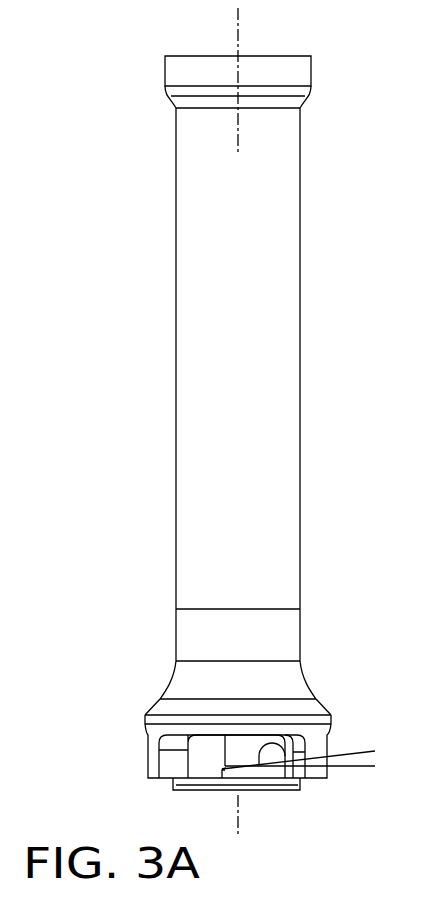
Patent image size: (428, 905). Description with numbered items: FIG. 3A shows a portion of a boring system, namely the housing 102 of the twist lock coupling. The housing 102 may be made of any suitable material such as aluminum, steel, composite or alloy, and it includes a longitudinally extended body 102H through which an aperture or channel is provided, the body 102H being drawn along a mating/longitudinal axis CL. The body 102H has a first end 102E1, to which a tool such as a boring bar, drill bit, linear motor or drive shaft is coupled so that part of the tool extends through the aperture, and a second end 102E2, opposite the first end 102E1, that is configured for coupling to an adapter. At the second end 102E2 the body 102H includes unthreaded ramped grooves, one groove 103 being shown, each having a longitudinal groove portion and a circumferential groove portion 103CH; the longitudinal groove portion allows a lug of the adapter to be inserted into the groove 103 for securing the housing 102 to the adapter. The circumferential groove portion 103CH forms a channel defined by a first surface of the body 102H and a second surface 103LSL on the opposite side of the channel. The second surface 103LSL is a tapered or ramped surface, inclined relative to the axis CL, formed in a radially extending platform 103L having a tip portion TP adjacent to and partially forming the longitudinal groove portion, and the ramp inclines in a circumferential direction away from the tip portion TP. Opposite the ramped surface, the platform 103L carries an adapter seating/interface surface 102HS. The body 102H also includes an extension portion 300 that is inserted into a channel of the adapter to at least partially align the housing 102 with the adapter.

The housing 102 is at (325, 125).
The first end 102E1 is at (172, 42).
The second end 102E2 is at (289, 811).
The longitudinally extended body 102H is at (300, 262).
The adapter seating/interface surface 102HS is at (153, 779).
The groove 103 is at (218, 752).
The circumferential groove portion 103CH is at (250, 745).
The radially extending platform 103L is at (255, 770).
The second surface 103LSL is at (286, 750).
The extension portion 300 is at (173, 778).
The tip portion TP is at (222, 768).
The mating/longitudinal axis CL is at (240, 38).